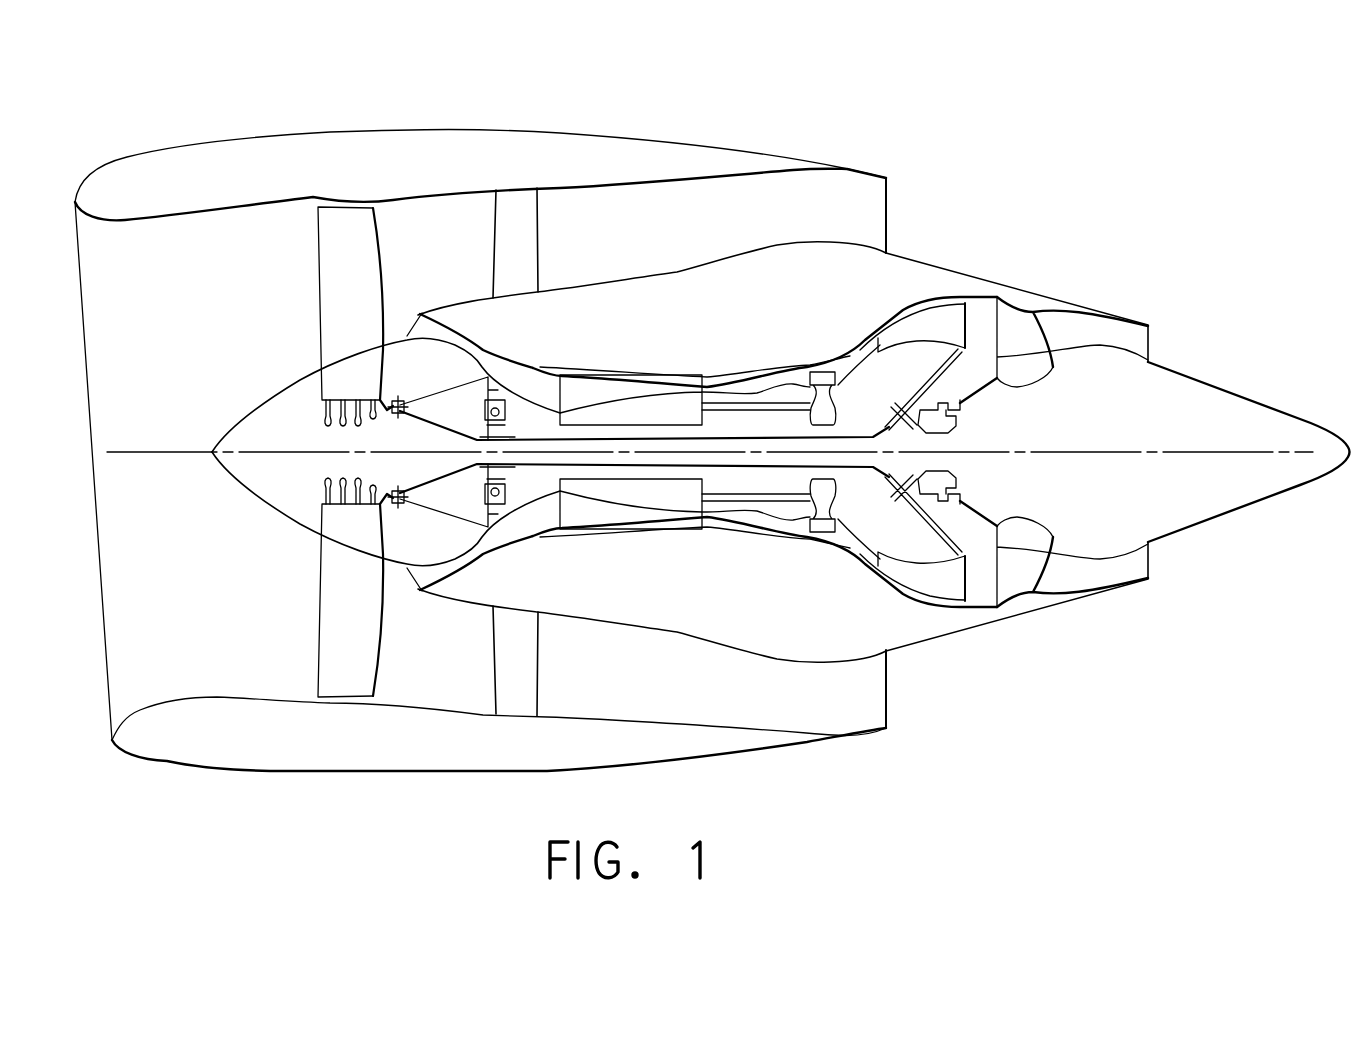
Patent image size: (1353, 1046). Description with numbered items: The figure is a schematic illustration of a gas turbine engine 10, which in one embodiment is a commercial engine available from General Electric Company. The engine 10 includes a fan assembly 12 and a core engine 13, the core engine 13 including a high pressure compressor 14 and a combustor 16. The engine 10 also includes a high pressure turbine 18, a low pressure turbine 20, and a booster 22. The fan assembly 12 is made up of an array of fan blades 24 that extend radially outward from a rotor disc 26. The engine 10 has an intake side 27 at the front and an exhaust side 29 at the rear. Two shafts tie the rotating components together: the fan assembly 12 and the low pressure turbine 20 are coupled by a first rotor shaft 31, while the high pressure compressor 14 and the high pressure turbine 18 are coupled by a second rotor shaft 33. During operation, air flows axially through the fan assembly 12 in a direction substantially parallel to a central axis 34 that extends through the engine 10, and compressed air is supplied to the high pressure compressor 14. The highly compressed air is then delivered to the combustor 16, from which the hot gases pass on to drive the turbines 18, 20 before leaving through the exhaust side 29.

The gas turbine engine 10 is at (782, 92).
The fan assembly 12 is at (345, 604).
The core engine 13 is at (702, 287).
The high pressure compressor 14 is at (583, 387).
The combustor 16 is at (773, 384).
The high pressure turbine 18 is at (823, 377).
The low pressure turbine 20 is at (923, 320).
The booster 22 is at (467, 333).
The fan blades 24 is at (343, 281).
The rotor disc 26 is at (347, 525).
The intake side 27 is at (48, 242).
The exhaust side 29 is at (945, 207).
The first rotor shaft 31 is at (740, 437).
The second rotor shaft 33 is at (740, 517).
The central axis 34 is at (135, 452).